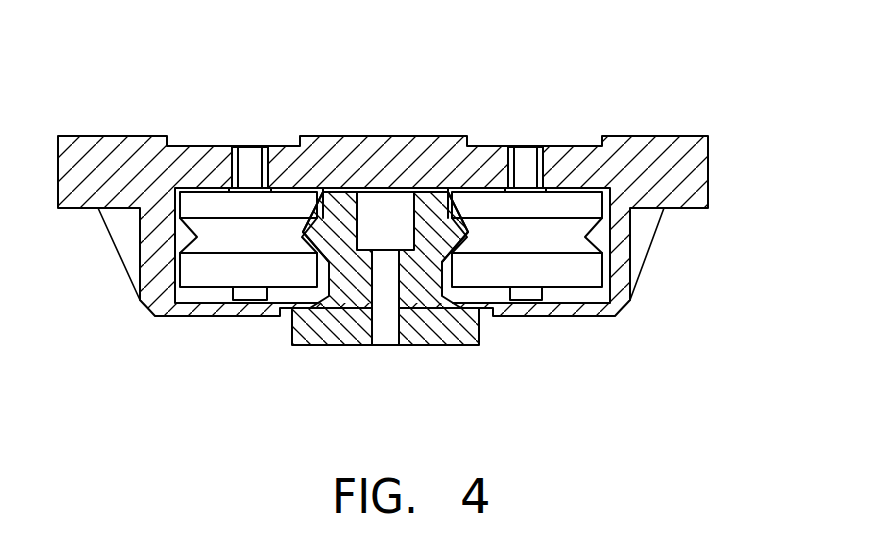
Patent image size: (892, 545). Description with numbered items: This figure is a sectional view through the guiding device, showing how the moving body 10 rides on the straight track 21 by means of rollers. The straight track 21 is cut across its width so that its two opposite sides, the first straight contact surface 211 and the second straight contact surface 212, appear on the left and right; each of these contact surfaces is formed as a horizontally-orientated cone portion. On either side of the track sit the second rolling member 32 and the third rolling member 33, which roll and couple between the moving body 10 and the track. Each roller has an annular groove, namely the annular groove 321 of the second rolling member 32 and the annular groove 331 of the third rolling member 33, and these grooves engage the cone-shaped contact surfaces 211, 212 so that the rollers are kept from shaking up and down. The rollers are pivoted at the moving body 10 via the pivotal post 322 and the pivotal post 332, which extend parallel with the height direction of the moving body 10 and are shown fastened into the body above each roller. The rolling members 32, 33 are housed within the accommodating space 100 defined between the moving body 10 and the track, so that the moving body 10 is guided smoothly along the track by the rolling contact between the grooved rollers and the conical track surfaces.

The moving body 10 is at (379, 179).
The straight track 21 is at (508, 318).
The first straight contact surface 211 is at (284, 315).
The second straight contact surface 212 is at (609, 277).
The second rolling member 32 is at (168, 165).
The annular groove 321 is at (108, 261).
The pivotal post 322 is at (311, 108).
The third rolling member 33 is at (634, 156).
The annular groove 331 is at (701, 239).
The pivotal post 332 is at (516, 108).
The accommodating space 100 is at (356, 364).